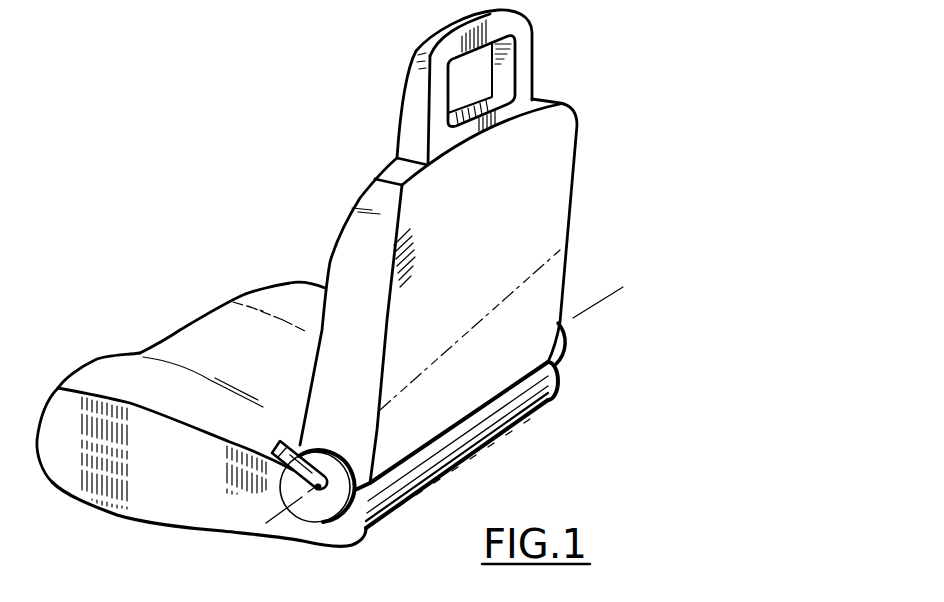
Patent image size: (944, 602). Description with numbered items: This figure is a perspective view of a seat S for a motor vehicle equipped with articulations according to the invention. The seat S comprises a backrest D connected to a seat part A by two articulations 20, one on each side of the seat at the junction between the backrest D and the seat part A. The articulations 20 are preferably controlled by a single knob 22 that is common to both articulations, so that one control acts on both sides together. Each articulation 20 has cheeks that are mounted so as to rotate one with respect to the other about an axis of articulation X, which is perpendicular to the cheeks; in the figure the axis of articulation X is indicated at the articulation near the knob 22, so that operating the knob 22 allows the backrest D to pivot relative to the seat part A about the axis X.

The seat S is at (592, 92).
The seat part A is at (209, 330).
The backrest D is at (530, 222).
The articulations 20 is at (320, 516).
The knob 22 is at (285, 463).
The axis of articulation X is at (278, 513).